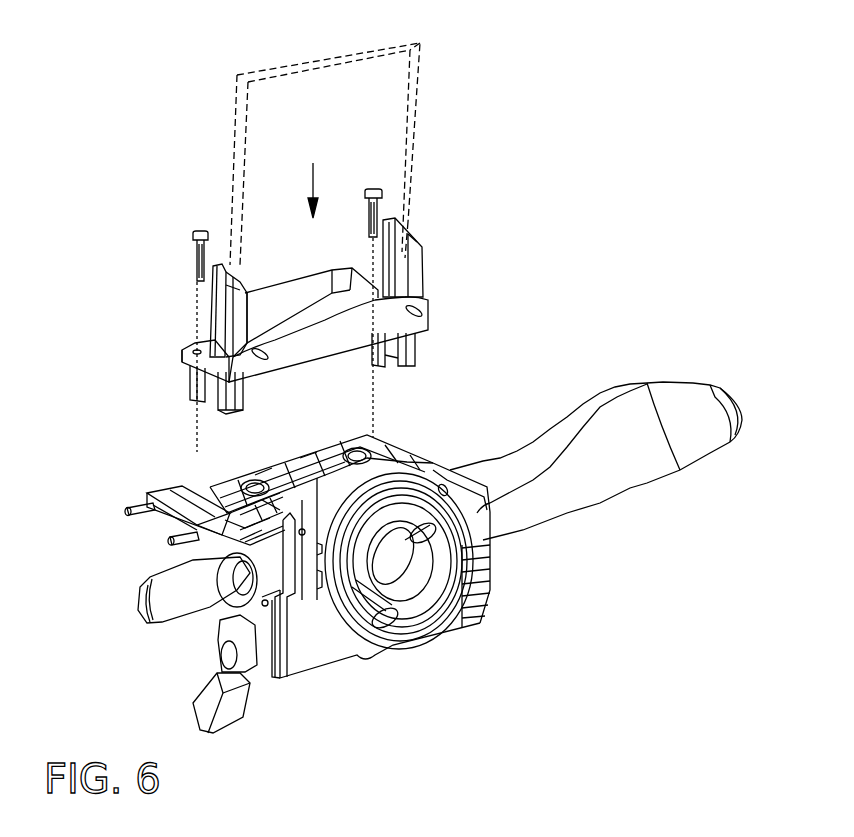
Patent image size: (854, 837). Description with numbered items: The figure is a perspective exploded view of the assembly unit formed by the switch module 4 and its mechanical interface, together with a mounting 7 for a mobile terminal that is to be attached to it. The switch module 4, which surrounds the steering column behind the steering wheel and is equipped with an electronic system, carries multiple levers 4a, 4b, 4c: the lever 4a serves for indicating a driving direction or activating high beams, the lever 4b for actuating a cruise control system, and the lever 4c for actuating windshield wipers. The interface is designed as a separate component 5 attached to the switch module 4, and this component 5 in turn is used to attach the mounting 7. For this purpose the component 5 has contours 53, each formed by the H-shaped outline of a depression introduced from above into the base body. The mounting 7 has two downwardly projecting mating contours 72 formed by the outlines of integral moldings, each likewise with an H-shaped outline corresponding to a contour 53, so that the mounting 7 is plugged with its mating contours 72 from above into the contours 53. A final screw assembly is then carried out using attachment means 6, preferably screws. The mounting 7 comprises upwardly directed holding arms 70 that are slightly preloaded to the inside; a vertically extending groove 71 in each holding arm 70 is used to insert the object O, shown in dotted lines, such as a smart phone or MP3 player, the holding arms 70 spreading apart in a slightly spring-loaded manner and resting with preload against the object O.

The object O is at (331, 62).
The mounting 7 is at (313, 198).
The attachment means 6 is at (196, 231).
The holding arms 70 is at (238, 325).
The groove 71 is at (235, 287).
The mating contours 72 is at (233, 411).
The component 5 is at (441, 435).
The contours 53 is at (230, 497).
The switch module 4 is at (500, 634).
The lever 4a is at (140, 603).
The lever 4b is at (203, 710).
The lever 4c is at (730, 403).